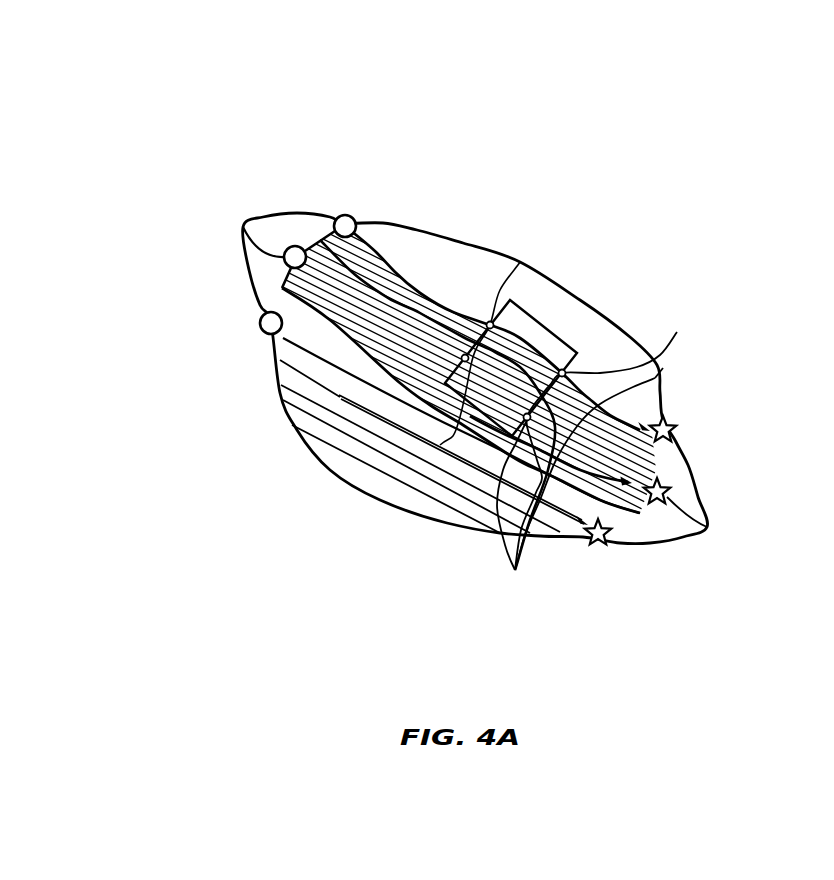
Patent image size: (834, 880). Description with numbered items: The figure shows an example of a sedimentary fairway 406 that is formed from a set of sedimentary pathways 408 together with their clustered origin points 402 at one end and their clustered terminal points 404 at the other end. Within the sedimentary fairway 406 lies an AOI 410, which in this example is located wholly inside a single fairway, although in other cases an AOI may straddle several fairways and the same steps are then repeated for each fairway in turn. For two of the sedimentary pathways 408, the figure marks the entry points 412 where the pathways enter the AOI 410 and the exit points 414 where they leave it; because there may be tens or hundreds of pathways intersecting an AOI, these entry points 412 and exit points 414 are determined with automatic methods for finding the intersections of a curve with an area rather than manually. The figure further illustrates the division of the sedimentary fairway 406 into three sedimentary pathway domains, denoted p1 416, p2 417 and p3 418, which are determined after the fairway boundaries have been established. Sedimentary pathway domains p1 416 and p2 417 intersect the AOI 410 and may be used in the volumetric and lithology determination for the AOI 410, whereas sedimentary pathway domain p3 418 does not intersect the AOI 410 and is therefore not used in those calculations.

The origin points 402 is at (243, 227).
The terminal points 404 is at (707, 527).
The sedimentary fairway 406 is at (385, 222).
The sedimentary pathways 408 is at (498, 454).
The AOI 410 is at (521, 265).
The entry points 412 is at (520, 262).
The exit points 414 is at (691, 382).
The sedimentary pathway domain p1 416 is at (417, 243).
The sedimentary pathway domain p2 417 is at (358, 325).
The sedimentary pathway domain p3 418 is at (338, 457).